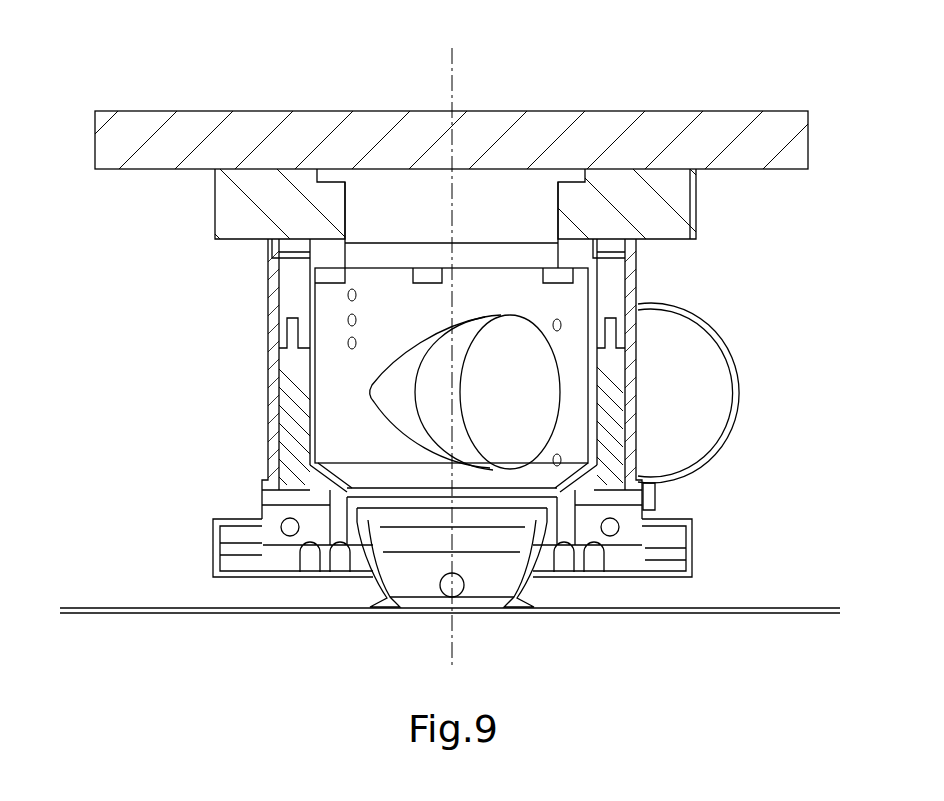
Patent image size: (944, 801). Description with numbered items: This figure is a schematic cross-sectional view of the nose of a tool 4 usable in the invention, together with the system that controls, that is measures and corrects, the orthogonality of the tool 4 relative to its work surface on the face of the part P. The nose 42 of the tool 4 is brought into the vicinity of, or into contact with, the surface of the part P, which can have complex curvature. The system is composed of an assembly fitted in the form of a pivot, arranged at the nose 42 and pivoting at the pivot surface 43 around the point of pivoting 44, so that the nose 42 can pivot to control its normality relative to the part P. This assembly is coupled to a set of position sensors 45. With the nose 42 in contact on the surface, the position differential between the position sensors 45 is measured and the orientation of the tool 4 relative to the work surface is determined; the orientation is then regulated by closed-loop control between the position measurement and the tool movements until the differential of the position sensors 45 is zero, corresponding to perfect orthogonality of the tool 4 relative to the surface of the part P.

The tool 4 is at (168, 140).
The nose 42 is at (387, 605).
The pivot surface 43 is at (578, 492).
The point of pivoting 44 is at (452, 613).
The position sensors 45 is at (613, 377).
The part P is at (755, 608).